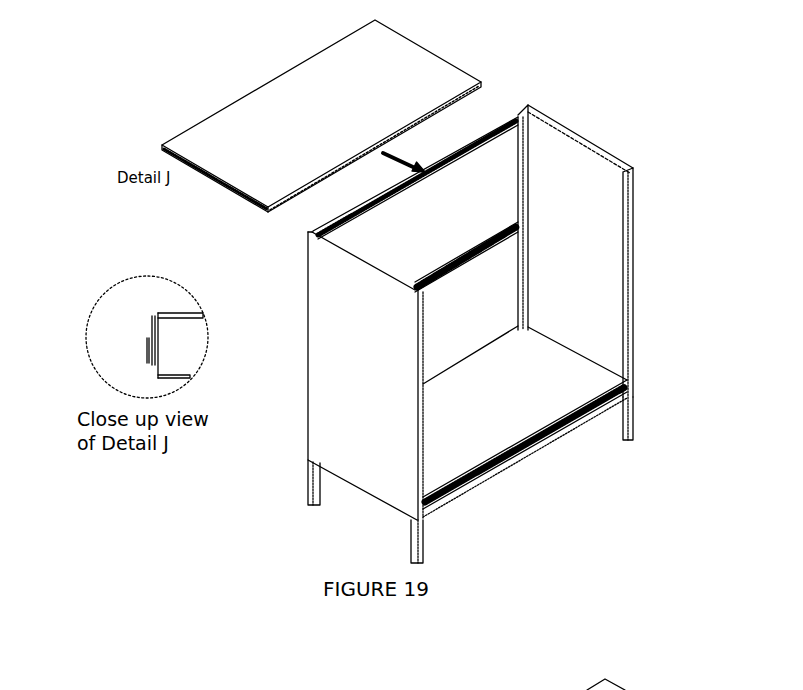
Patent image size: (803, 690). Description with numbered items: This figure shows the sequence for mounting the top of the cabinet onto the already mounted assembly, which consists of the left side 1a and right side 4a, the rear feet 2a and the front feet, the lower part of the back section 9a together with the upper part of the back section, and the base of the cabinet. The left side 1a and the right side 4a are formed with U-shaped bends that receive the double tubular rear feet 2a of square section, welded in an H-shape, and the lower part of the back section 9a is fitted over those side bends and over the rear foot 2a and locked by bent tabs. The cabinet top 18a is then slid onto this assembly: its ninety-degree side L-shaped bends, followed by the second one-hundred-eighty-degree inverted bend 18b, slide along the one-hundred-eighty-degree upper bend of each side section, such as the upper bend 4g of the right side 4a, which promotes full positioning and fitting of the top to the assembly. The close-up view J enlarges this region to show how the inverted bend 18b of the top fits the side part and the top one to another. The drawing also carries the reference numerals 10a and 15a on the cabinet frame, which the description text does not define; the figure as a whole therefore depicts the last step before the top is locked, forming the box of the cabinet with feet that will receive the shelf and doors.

The left side 1a is at (350, 360).
The rear feet 2a is at (312, 484).
The right side 4a is at (595, 310).
The 180° upper bend of the right side 4g is at (600, 150).
The lower part of the back section 9a is at (505, 290).
The top frame opening 10a is at (495, 162).
The bottom front rail 15a is at (483, 424).
The cabinet top 18a is at (308, 96).
The second 180° inverted bend 18b is at (428, 49).